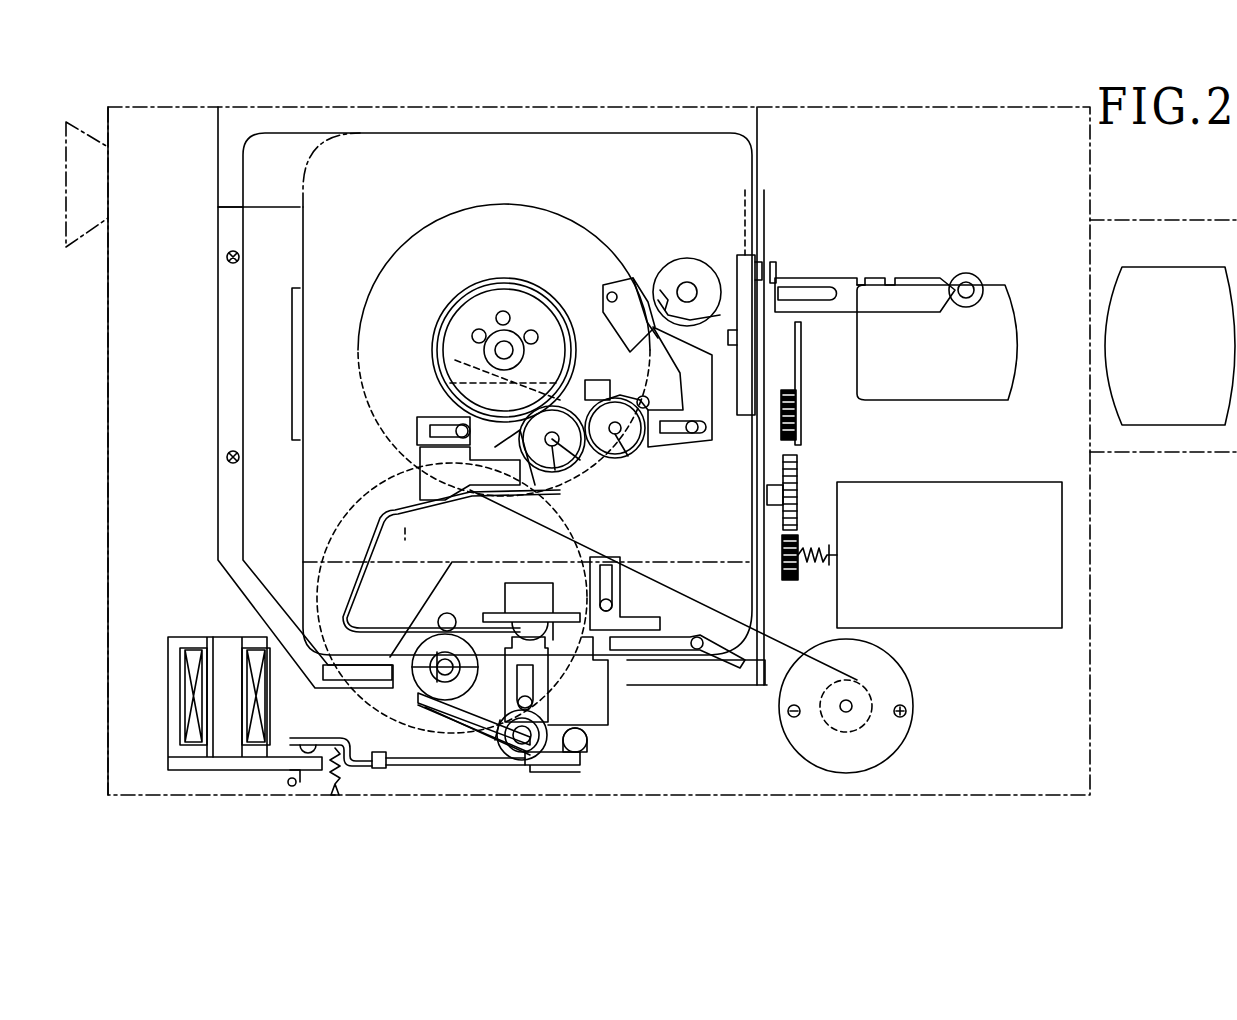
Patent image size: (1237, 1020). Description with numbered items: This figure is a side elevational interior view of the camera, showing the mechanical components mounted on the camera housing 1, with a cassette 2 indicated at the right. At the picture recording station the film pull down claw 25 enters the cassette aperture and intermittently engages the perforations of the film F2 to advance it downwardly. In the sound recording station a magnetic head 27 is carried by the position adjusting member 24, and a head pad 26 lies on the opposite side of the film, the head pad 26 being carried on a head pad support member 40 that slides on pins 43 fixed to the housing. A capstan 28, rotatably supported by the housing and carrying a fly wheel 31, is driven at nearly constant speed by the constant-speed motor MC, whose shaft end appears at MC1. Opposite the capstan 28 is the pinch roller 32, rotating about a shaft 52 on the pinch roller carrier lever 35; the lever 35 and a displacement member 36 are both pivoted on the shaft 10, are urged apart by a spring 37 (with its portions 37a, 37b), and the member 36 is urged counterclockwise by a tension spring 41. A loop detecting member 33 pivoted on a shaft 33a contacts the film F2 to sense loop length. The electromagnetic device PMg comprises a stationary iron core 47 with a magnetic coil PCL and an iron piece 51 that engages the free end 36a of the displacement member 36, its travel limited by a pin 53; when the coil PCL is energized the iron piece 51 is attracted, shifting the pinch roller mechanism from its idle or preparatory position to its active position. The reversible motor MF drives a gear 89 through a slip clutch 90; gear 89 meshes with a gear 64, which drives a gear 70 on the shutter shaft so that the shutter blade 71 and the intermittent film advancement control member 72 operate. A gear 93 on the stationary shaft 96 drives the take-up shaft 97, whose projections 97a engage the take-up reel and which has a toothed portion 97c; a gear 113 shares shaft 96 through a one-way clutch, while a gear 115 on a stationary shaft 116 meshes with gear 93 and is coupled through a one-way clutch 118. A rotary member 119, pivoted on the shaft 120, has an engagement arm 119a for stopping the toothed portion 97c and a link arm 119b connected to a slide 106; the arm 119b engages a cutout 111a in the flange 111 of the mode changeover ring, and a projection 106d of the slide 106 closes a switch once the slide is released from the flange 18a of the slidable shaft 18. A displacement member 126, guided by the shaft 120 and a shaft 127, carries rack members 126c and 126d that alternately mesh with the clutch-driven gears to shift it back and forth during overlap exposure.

The camera housing 1 is at (1085, 195).
The cassette 2 is at (1203, 225).
The shaft 10 is at (522, 760).
The slidable shaft 18 is at (966, 282).
The flange 18a is at (982, 290).
The position adjusting member 24 is at (520, 590).
The film pull down claw 25 is at (760, 262).
The head pad 26 is at (548, 660).
The magnetic head 27 is at (515, 625).
The capstan 28 is at (453, 613).
The fly wheel 31 is at (445, 764).
The pinch roller 32 is at (448, 660).
The loop detecting member 33 is at (665, 652).
The shaft 33a is at (700, 650).
The pinch roller carrier lever 35 is at (520, 745).
The displacement member 36 is at (552, 765).
The free end 36a is at (300, 742).
The spring 37 is at (480, 722).
The arm portion 37a is at (452, 735).
The engaging portion 37b is at (380, 750).
The head pad support member 40 is at (570, 700).
The tension spring 41 is at (360, 745).
The pins 43 is at (612, 605).
The stationary iron core 47 is at (222, 660).
The iron piece 51 is at (275, 760).
The shaft 52 is at (440, 660).
The pin 53 is at (293, 778).
The gear 64 is at (798, 497).
The gear 70 is at (797, 420).
The shutter blade 71 is at (802, 348).
The intermittent film advancement control member 72 is at (778, 268).
The gear 89 is at (790, 582).
The slip clutch 90 is at (815, 565).
The gear 93 is at (556, 447).
The stationary shaft 96 is at (550, 475).
The take-up shaft 97 is at (510, 302).
The rod-like projections 97a is at (475, 330).
The gear 97c is at (450, 372).
The slide 106 is at (918, 278).
The projection 106d is at (872, 278).
The flange 111 is at (703, 280).
The cutout 111a is at (668, 285).
The gear 113 is at (552, 470).
The gear 115 is at (690, 440).
The stationary shaft 116 is at (615, 436).
The clutch 118 is at (636, 452).
The rotary member 119 is at (615, 285).
The engagement arm 119a is at (498, 445).
The link arm 119b is at (640, 282).
The shaft 120 is at (708, 442).
The displacement member 126 is at (445, 334).
The rack member 126c is at (598, 380).
The rack member 126d is at (523, 500).
The shaft 127 is at (460, 420).
The film F2 is at (407, 543).
The motor MC is at (905, 690).
The motor shaft MC1 is at (853, 709).
The reversible electric motor MF is at (956, 482).
The magnetic coil PCL is at (187, 668).
The electromagnetic device PMg is at (184, 733).